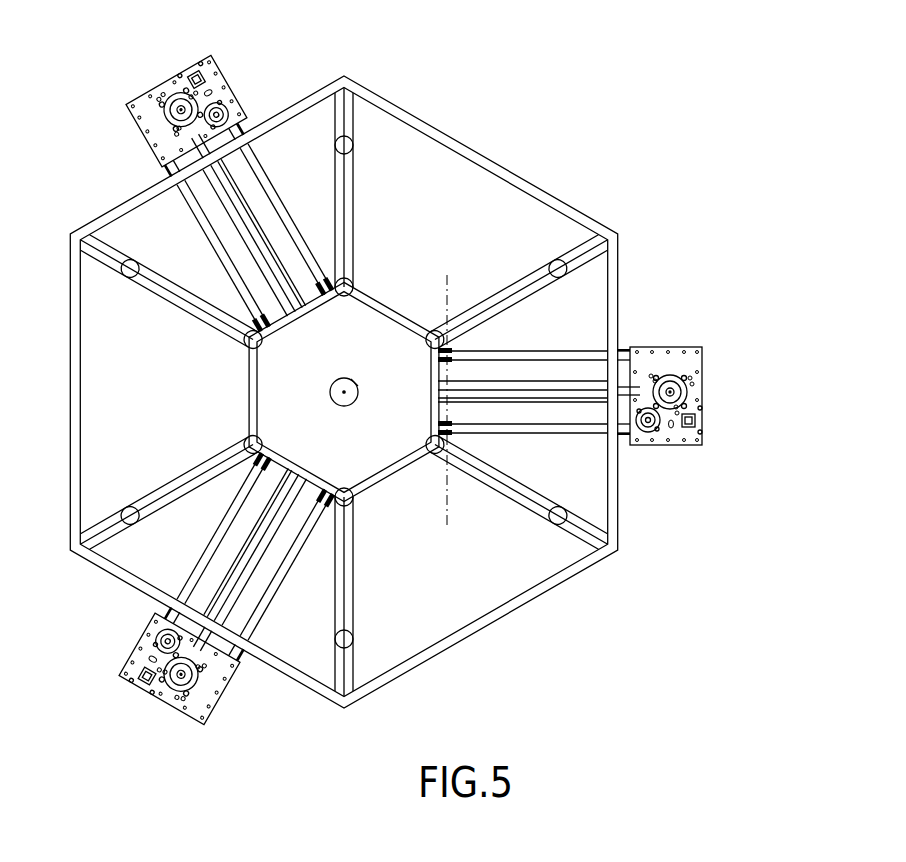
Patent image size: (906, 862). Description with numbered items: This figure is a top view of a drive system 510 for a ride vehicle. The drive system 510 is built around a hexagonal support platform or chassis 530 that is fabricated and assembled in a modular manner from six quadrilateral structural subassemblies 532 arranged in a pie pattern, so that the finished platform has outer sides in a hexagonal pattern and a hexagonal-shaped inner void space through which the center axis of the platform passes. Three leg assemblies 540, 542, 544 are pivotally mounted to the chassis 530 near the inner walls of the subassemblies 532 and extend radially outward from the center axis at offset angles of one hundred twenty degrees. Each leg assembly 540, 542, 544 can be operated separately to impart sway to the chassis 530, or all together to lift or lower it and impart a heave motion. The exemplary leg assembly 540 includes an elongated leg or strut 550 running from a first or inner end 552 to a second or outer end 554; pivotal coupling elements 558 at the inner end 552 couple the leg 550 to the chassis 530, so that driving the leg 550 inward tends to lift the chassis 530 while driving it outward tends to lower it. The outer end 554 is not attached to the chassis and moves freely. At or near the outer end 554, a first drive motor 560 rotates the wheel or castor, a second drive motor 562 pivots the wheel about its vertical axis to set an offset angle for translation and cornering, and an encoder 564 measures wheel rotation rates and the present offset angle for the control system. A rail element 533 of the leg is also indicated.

The drive system 510 is at (600, 71).
The hexagonal support platform or chassis 530 is at (533, 165).
The quadrilateral structural subassembly 532 is at (624, 257).
The leg rail 533 is at (522, 400).
The leg assembly 540 is at (720, 458).
The leg assembly 542 is at (166, 59).
The leg assembly 544 is at (136, 699).
The leg or strut 550 is at (550, 340).
The first or inner end 552 is at (466, 349).
The second or outer end 554 is at (659, 347).
The pivotal coupling elements 558 is at (452, 357).
The first drive motor 560 is at (681, 373).
The second drive motor 562 is at (655, 437).
The encoder 564 is at (697, 418).